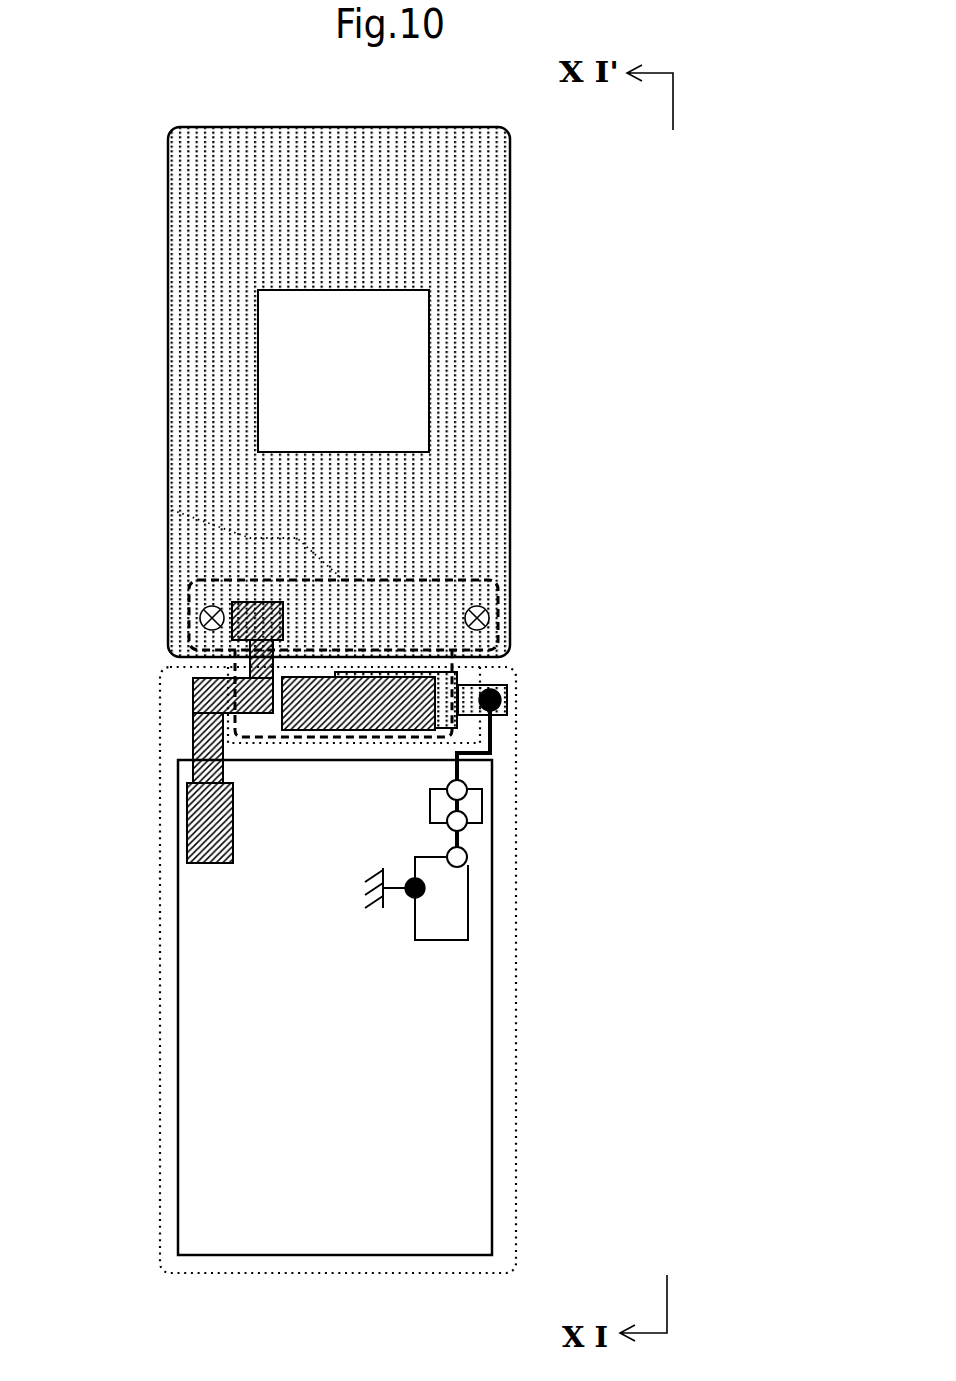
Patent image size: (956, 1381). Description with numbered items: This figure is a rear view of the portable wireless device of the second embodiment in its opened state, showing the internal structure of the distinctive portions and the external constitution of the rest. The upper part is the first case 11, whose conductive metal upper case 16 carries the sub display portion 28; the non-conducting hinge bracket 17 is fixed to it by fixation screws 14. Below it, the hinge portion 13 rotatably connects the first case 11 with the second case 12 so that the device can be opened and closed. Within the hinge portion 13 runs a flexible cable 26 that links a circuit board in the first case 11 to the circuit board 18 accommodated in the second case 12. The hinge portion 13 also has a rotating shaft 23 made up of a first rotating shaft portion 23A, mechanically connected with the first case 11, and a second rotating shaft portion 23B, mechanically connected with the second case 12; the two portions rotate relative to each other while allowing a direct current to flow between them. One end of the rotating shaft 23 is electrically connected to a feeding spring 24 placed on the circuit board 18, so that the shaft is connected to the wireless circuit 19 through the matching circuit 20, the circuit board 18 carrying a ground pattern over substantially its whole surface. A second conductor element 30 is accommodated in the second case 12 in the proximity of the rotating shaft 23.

The first case 11 is at (117, 150).
The second case 12 is at (503, 1062).
The hinge portion 13 is at (122, 670).
The fixation screws 14 is at (200, 618).
The upper case 16 is at (467, 383).
The hinge bracket 17 is at (172, 512).
The circuit board 18 is at (475, 1165).
The wireless circuit 19 is at (445, 900).
The matching circuit 20 is at (468, 805).
The rotating shaft 23 is at (526, 711).
The first rotating shaft portion 23A is at (507, 692).
The second rotating shaft portion 23B is at (508, 717).
The feeding spring 24 is at (495, 728).
The flexible cable 26 is at (193, 747).
The sub display portion 28 is at (408, 317).
The second conductor element 30 is at (347, 720).